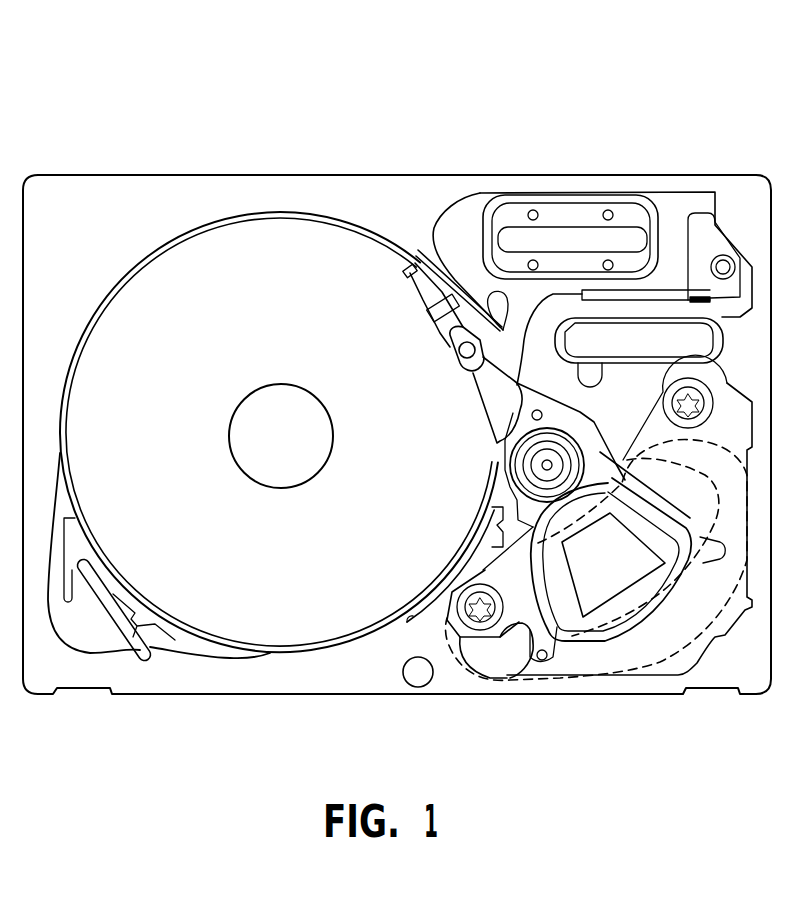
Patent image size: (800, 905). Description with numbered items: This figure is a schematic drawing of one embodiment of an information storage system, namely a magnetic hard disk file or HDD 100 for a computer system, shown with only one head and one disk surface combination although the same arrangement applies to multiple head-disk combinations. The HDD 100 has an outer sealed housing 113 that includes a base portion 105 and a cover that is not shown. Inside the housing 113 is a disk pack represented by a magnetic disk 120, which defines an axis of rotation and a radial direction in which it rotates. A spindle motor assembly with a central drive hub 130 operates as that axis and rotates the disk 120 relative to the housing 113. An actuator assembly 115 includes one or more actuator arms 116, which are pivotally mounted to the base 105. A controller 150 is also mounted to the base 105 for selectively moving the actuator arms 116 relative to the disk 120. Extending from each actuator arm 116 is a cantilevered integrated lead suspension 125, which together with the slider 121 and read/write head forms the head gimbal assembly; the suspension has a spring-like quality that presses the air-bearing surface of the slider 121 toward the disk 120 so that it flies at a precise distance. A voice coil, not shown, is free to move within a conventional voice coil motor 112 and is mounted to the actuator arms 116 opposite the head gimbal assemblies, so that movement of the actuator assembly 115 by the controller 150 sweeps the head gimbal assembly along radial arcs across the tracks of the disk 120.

The HDD 100 is at (146, 140).
The base portion 105 is at (333, 193).
The voice coil motor 112 is at (502, 675).
The housing 113 is at (425, 174).
The actuator assembly 115 is at (510, 488).
The actuator arm 116 is at (518, 385).
The magnetic disk 120 is at (253, 262).
The slider 121 is at (404, 277).
The integrated lead suspension 125 is at (413, 333).
The central drive hub 130 is at (259, 455).
The controller 150 is at (693, 585).